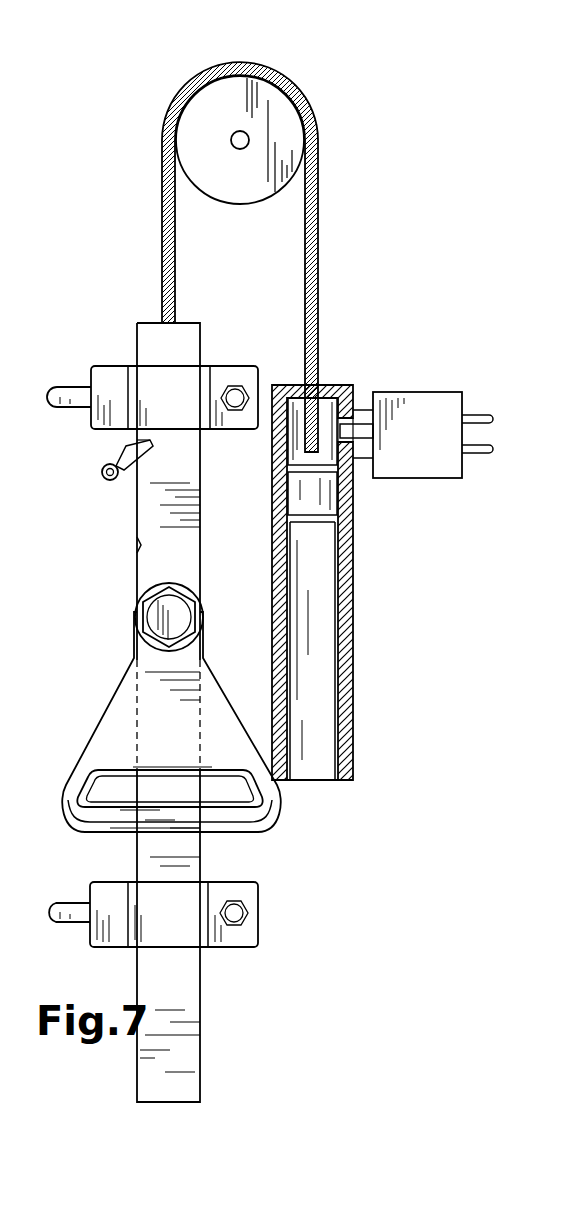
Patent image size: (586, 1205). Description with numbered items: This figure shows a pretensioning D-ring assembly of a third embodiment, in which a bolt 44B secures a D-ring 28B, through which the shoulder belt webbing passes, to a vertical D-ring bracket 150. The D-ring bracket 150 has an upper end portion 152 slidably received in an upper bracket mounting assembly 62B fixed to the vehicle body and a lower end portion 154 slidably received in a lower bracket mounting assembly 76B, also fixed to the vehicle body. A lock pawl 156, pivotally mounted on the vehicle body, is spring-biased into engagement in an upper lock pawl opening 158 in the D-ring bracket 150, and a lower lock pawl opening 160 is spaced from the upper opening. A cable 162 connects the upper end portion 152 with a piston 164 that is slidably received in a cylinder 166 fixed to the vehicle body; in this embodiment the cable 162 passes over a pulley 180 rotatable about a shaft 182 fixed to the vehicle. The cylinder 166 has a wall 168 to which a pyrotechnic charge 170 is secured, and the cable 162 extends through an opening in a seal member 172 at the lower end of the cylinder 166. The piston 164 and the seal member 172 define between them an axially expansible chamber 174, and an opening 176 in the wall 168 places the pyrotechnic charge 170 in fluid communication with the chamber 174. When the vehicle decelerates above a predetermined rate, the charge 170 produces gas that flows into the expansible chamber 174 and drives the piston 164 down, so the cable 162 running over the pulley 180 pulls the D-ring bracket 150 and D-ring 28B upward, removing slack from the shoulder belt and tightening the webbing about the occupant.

The D-ring bracket 150 is at (128, 575).
The upper end portion 152 is at (196, 323).
The lower end portion 154 is at (199, 1083).
The lock pawl 156 is at (120, 454).
The upper lock pawl opening 158 is at (145, 451).
The lower lock pawl opening 160 is at (141, 554).
The cable 162 is at (318, 273).
The piston 164 is at (312, 512).
The cylinder 166 is at (362, 757).
The wall 168 is at (347, 673).
The pyrotechnic charge 170 is at (427, 480).
The seal member 172 is at (331, 430).
The expansible chamber 174 is at (352, 392).
The opening 176 is at (367, 458).
The pulley 180 is at (288, 150).
The shaft 182 is at (249, 136).
The upper bracket mounting assembly 62B is at (110, 366).
The lower bracket mounting assembly 76B is at (228, 948).
The bolt 44B is at (148, 602).
The D-ring 28B is at (125, 718).